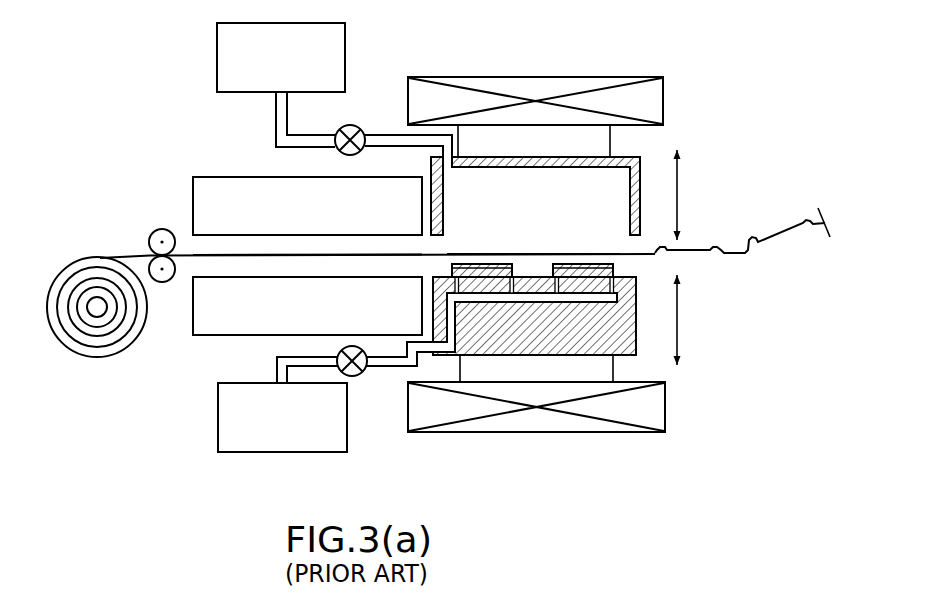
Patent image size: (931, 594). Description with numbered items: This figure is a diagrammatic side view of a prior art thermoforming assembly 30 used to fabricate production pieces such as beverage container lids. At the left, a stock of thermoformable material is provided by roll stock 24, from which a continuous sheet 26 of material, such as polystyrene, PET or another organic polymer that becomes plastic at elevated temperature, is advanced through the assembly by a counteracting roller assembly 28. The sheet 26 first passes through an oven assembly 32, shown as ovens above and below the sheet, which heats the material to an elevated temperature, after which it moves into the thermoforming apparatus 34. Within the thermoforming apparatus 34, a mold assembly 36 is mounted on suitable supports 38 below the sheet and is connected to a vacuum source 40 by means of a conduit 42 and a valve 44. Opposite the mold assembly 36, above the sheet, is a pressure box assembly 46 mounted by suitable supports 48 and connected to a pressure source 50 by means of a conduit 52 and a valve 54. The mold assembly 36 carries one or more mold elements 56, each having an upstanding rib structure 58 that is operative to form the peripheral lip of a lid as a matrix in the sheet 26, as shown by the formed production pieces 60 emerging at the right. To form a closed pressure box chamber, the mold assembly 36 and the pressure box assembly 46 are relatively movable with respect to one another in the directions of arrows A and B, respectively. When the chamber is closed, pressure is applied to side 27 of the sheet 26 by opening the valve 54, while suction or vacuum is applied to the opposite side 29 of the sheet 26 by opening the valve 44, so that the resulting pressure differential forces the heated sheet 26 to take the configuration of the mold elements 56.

The roll stock 24 is at (100, 357).
The continuous sheet 26 is at (120, 256).
The side of sheet 27 is at (452, 255).
The counteracting roller assembly 28 is at (150, 225).
The side of sheet 29 is at (237, 252).
The thermoforming assembly 30 is at (786, 67).
The oven assembly 32 is at (213, 168).
The thermoforming apparatus 34 is at (655, 66).
The mold assembly 36 is at (566, 342).
The supports 38 is at (527, 418).
The vacuum source 40 is at (250, 452).
The conduit 42 is at (277, 375).
The valve 44 is at (361, 373).
The pressure box assembly 46 is at (565, 163).
The supports 48 is at (515, 88).
The pressure source 50 is at (227, 82).
The conduit 52 is at (275, 110).
The valve 54 is at (356, 123).
The mold elements 56 is at (590, 265).
The upstanding rib structure 58 is at (570, 256).
The formed production pieces 60 is at (697, 238).
The arrow A is at (677, 313).
The arrow B is at (677, 192).